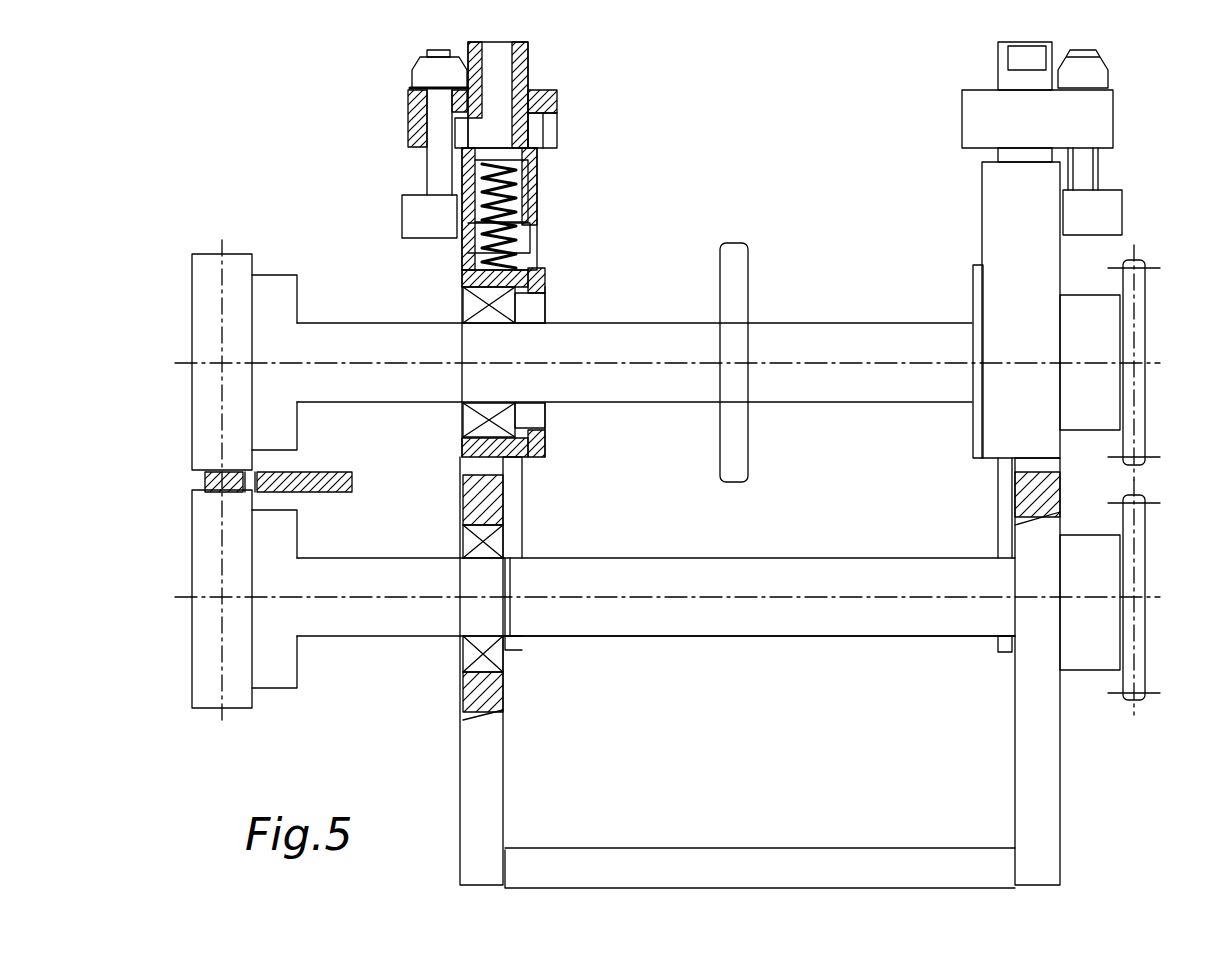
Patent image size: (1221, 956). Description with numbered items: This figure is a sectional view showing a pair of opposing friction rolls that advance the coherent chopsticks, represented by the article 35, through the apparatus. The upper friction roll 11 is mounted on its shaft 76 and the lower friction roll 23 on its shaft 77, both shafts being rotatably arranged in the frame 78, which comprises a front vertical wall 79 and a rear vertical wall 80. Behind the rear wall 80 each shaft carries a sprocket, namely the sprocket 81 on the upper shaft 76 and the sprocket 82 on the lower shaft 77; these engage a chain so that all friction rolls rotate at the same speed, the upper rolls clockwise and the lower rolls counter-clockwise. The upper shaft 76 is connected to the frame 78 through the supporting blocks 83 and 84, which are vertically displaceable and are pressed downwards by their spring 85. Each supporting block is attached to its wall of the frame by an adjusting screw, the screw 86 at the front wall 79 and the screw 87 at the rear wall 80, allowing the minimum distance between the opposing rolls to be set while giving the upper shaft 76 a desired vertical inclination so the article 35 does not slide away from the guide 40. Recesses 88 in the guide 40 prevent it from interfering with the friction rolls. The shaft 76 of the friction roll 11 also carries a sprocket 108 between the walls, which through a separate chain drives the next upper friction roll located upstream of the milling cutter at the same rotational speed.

The upper friction roll 11 is at (198, 290).
The lower friction roll 23 is at (200, 678).
The article 35 is at (200, 482).
The guide 40 is at (312, 470).
The recess 88 is at (265, 492).
The shaft of upper friction roll 76 is at (345, 325).
The shaft of lower friction roll 77 is at (380, 565).
The supporting block 83 is at (462, 275).
The front vertical wall 79 is at (485, 748).
The frame 78 is at (514, 798).
The rear vertical wall 80 is at (1040, 802).
The supporting block 84 is at (998, 208).
The adjusting screw 87 is at (1085, 182).
The sprocket 81 is at (1140, 328).
The sprocket 82 is at (1140, 566).
The sprocket 108 is at (732, 280).
The spring 85 is at (520, 190).
The adjusting screw 86 is at (440, 160).